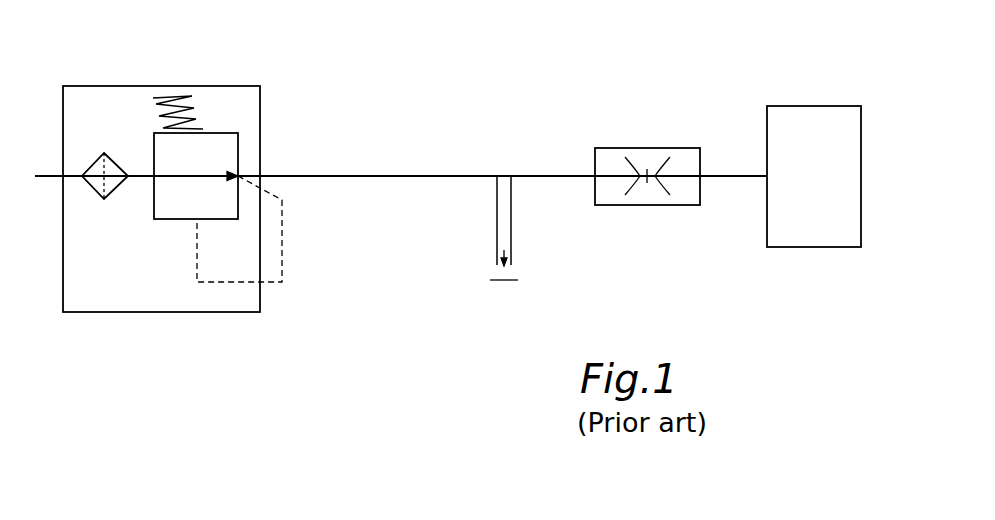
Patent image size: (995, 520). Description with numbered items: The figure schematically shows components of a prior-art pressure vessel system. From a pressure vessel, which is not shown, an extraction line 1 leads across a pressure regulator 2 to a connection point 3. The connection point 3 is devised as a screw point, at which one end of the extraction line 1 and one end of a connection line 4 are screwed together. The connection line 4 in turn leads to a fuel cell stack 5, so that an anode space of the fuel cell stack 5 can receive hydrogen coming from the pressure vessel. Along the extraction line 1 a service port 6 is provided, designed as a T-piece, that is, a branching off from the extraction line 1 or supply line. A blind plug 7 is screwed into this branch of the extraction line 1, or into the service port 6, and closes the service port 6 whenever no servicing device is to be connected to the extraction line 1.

The extraction line 1 is at (316, 176).
The pressure regulator 2 is at (112, 103).
The connection point 3 is at (648, 155).
The connection line 4 is at (716, 174).
The fuel cell stack 5 is at (808, 122).
The service port 6 is at (488, 188).
The blind plug 7 is at (500, 282).